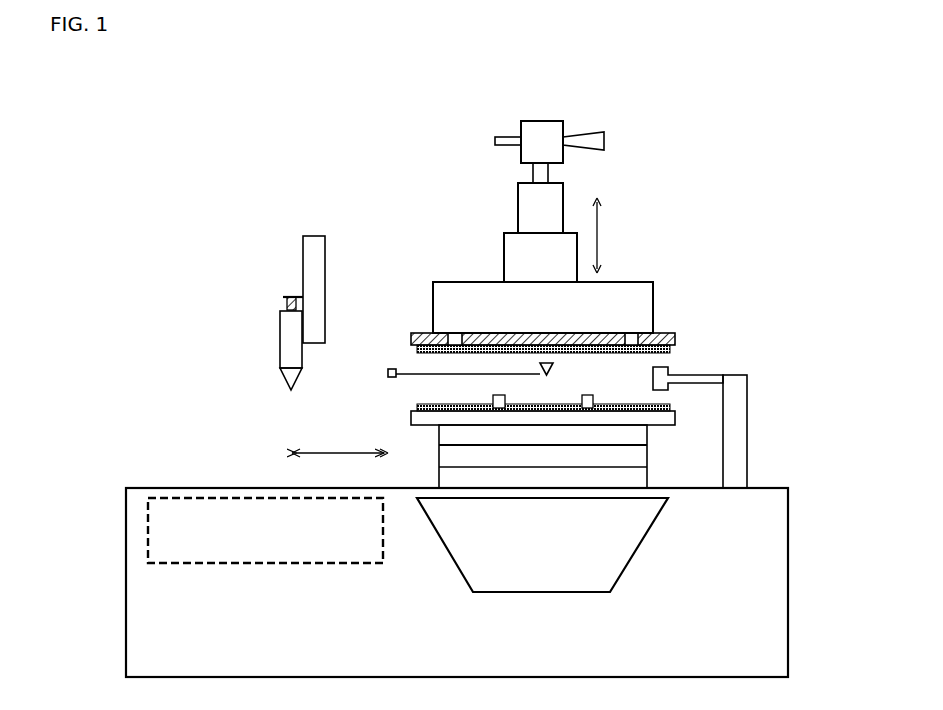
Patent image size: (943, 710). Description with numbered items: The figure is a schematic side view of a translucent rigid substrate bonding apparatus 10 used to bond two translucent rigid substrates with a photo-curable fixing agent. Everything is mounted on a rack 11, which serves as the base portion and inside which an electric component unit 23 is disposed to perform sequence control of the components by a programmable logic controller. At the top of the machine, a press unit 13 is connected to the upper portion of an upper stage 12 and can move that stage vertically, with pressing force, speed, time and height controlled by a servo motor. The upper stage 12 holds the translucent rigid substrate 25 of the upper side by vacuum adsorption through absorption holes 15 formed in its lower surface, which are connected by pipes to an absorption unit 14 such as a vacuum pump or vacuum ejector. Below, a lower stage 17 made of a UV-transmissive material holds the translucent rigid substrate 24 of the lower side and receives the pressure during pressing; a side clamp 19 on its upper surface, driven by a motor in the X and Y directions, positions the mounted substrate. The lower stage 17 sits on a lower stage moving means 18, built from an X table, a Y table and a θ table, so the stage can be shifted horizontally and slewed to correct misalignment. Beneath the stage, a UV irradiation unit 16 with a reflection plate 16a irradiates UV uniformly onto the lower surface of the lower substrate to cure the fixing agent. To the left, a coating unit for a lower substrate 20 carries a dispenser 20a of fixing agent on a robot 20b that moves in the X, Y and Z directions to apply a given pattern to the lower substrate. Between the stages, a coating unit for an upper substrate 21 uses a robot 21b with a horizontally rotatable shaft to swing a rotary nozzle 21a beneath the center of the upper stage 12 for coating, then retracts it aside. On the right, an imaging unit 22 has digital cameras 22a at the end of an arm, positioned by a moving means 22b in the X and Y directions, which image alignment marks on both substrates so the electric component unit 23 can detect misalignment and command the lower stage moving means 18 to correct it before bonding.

The translucent rigid substrate bonding apparatus 10 is at (398, 152).
The rack 11 is at (262, 488).
The upper stage 12 is at (518, 318).
The press unit 13 is at (458, 280).
The absorption unit 14 is at (510, 118).
The absorption hole 15 is at (630, 333).
The UV irradiation unit 16 is at (571, 545).
The reflection plate 16a is at (628, 568).
The lower stage 17 is at (410, 418).
The lower stage moving means 18 is at (437, 433).
The side clamp 19 is at (580, 400).
The coating unit for a lower substrate 20 is at (267, 292).
The dispenser 20a is at (281, 281).
The robot 20b is at (318, 236).
The coating unit for an upper substrate 21 is at (458, 369).
The rotary nozzle 21a is at (538, 370).
The robot 21b is at (388, 373).
The imaging unit 22 is at (745, 414).
The digital camera 22a is at (668, 372).
The moving means 22b is at (748, 435).
The electric component unit 23 is at (148, 538).
The translucent rigid substrate of the lower side 24 is at (417, 407).
The translucent rigid substrate of the upper side 25 is at (417, 349).